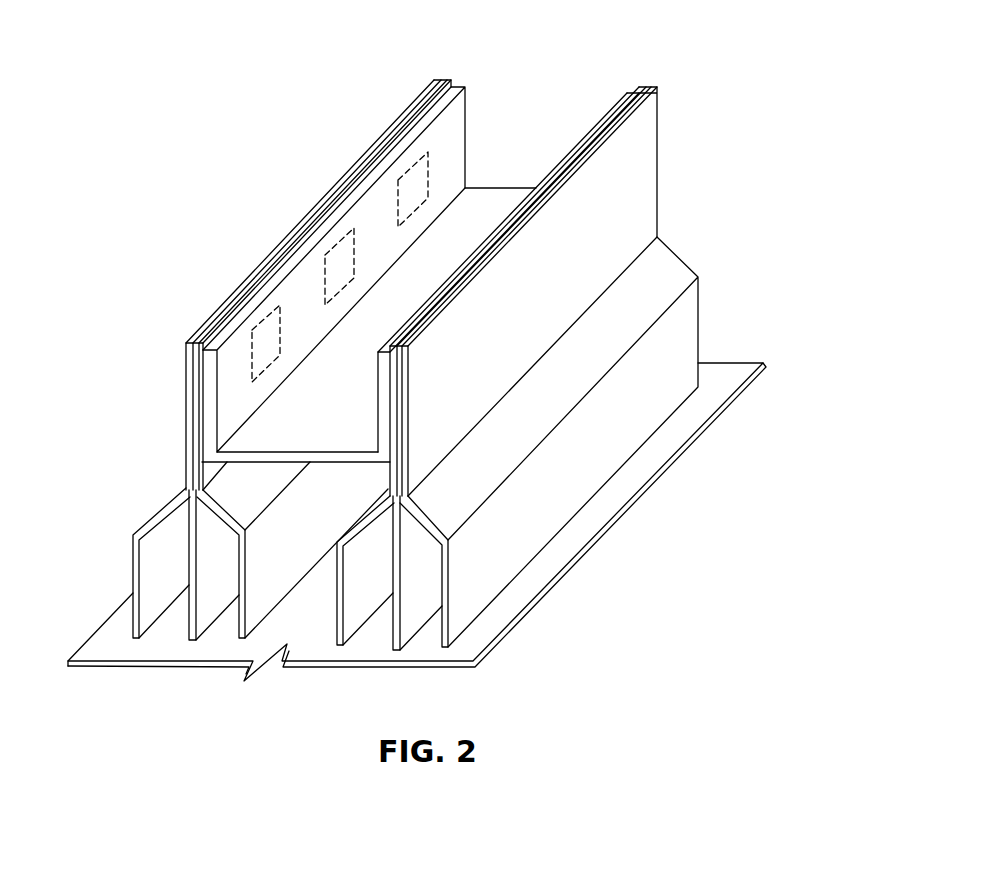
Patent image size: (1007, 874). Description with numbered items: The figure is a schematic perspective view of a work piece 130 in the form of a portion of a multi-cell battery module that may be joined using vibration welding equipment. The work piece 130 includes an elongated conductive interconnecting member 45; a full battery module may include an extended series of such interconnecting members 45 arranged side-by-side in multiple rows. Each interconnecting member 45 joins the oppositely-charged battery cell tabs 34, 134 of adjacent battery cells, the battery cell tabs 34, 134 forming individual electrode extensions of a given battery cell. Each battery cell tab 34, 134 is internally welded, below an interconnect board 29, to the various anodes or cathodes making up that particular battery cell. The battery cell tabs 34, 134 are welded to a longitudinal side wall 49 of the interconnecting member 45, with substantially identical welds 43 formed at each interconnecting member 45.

The interconnecting member 45 is at (571, 50).
The work piece 130 is at (704, 142).
The longitudinal side wall 49 is at (448, 120).
The welds 43 is at (430, 172).
The battery cell tab 34 is at (160, 568).
The battery cell tab 134 is at (476, 596).
The interconnect board 29 is at (84, 658).